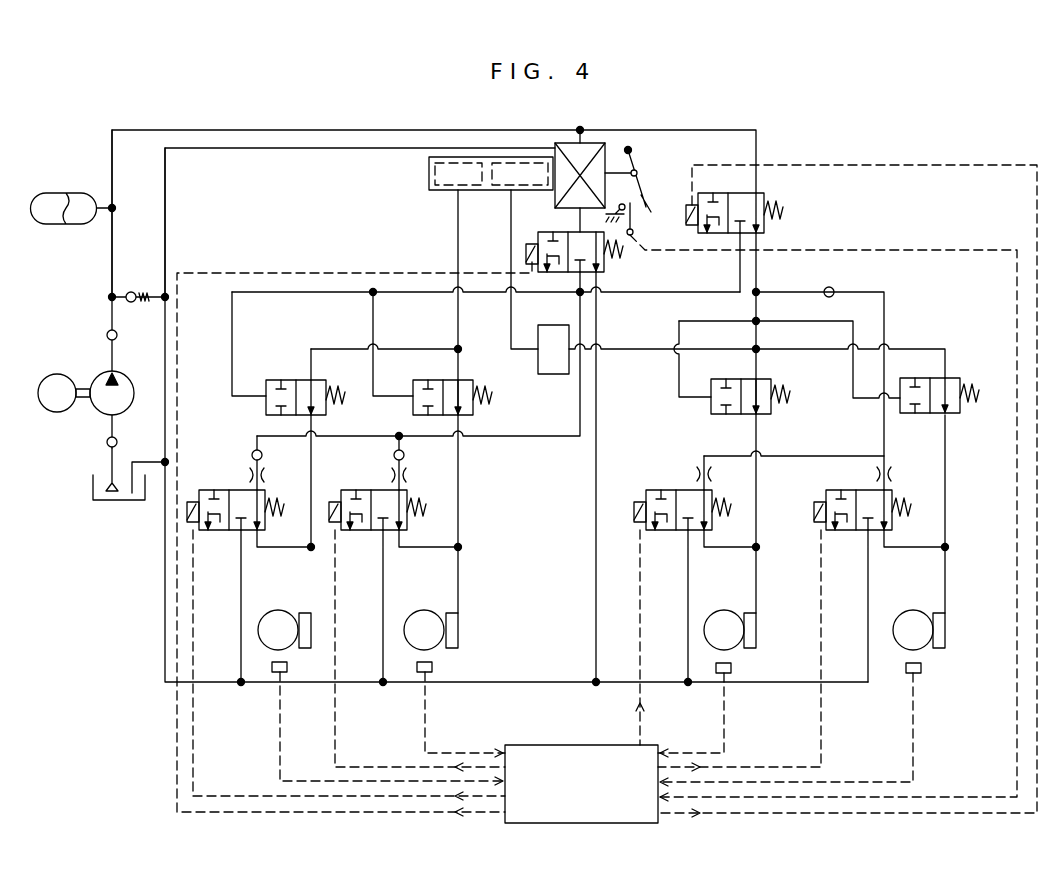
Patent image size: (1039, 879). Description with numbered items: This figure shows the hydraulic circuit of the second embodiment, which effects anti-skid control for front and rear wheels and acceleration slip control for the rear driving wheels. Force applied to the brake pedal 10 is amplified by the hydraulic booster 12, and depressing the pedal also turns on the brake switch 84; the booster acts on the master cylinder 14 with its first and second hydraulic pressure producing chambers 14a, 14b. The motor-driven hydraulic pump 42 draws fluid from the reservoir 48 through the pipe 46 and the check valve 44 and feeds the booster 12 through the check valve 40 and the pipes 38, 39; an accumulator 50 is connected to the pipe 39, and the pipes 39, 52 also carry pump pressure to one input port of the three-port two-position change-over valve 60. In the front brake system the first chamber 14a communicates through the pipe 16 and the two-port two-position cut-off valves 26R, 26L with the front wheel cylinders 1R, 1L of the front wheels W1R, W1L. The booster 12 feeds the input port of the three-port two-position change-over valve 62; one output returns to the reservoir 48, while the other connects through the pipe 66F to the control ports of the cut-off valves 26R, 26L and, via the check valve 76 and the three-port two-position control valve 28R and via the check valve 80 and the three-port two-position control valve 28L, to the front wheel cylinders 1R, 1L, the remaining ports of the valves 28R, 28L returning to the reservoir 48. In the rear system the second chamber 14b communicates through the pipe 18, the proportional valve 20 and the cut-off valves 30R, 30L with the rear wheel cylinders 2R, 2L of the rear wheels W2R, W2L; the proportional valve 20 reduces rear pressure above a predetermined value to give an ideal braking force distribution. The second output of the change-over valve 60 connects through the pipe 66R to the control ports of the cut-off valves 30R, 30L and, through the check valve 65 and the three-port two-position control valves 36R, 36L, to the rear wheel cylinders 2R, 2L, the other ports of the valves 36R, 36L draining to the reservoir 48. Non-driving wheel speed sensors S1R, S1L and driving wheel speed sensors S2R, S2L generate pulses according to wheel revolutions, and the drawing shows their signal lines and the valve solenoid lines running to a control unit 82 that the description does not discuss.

The pipe 39 is at (178, 130).
The pipe 52 is at (657, 131).
The pipe 38 is at (575, 129).
The accumulator 50 is at (82, 193).
The check valve 40 is at (105, 330).
The motor-driven hydraulic pump 42 is at (96, 375).
The check valve 44 is at (106, 446).
The pipe 46 is at (105, 468).
The reservoir 48 is at (108, 505).
The master cylinder 14 is at (429, 186).
The first hydraulic pressure producing chamber 14a is at (433, 175).
The second hydraulic pressure producing chamber 14b is at (497, 185).
The pipe 16 is at (457, 231).
The pipe 18 is at (511, 219).
The hydraulic booster 12 is at (590, 142).
The brake pedal 10 is at (650, 200).
The brake switch 84 is at (636, 221).
The three-port two-position change-over valve 60 is at (766, 195).
The three-port two-position change-over valve 62 is at (610, 265).
The check valve 65 is at (833, 287).
The pipe 66F is at (392, 294).
The pipe 66R is at (756, 308).
The two-port two-position cut-off valve 26R is at (268, 380).
The two-port two-position cut-off valve 26L is at (405, 395).
The cut-off valve 30R is at (765, 379).
The cut-off valve 30L is at (948, 378).
The proportional valve 20 is at (548, 374).
The check valve 76 is at (250, 452).
The check valve 80 is at (392, 454).
The three-port two-position control valve 28R is at (290, 482).
The three-port two-position control valve 28L is at (430, 480).
The three-port two-position control valve 36R is at (657, 534).
The three-port two-position control valve 36L is at (843, 534).
The front wheel W1R is at (268, 620).
The wheel cylinder 1R is at (300, 613).
The front wheel W1L is at (424, 612).
The wheel cylinder 1L is at (452, 622).
The rear wheel W2R is at (722, 615).
The wheel cylinder 2R is at (748, 622).
The rear wheel W2L is at (907, 615).
The wheel cylinder 2L is at (938, 622).
The non-driving wheel speed sensor S1R is at (279, 674).
The non-driving wheel speed sensor S1L is at (432, 667).
The driving wheel speed sensor S2R is at (735, 667).
The driving wheel speed sensor S2L is at (925, 667).
The electronic control unit 82 is at (530, 745).